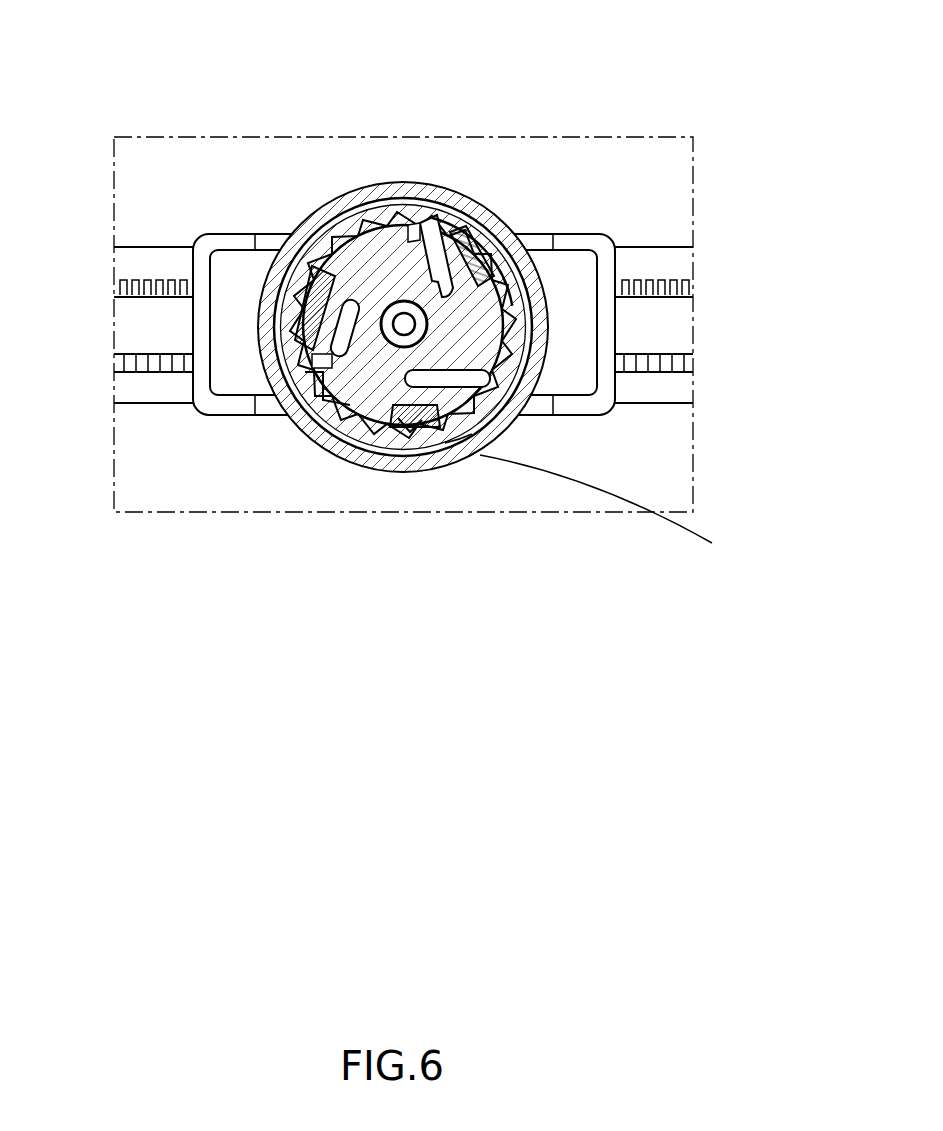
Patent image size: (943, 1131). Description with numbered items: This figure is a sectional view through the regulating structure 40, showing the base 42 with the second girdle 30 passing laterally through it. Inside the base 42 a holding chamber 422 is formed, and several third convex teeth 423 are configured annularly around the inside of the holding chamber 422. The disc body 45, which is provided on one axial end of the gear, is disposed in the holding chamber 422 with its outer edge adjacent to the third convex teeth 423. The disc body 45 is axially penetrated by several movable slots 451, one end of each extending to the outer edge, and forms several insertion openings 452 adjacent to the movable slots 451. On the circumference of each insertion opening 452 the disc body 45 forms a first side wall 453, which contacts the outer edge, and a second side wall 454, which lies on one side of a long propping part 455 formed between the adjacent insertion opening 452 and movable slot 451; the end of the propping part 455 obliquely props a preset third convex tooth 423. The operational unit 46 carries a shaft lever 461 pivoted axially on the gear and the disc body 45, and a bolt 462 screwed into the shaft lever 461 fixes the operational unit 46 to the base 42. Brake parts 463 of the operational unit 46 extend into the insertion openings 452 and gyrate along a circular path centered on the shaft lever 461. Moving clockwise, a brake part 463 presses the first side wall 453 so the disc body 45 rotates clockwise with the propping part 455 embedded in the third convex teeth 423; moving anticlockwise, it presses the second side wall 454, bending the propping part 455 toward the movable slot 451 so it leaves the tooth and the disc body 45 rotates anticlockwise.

The second girdle 30 is at (160, 258).
The regulating structure 40 is at (320, 165).
The base 42 is at (530, 325).
The disc body 45 is at (455, 378).
The operational unit 46 is at (403, 183).
The holding chamber 422 is at (535, 300).
The third convex teeth 423 is at (503, 285).
The movable slots 451 is at (507, 343).
The insertion openings 452 is at (393, 417).
The first side wall 453 is at (410, 422).
The second side wall 454 is at (450, 427).
The propping part 455 is at (497, 413).
The shaft lever 461 is at (387, 343).
The bolt 462 is at (393, 323).
The brake parts 463 is at (412, 430).